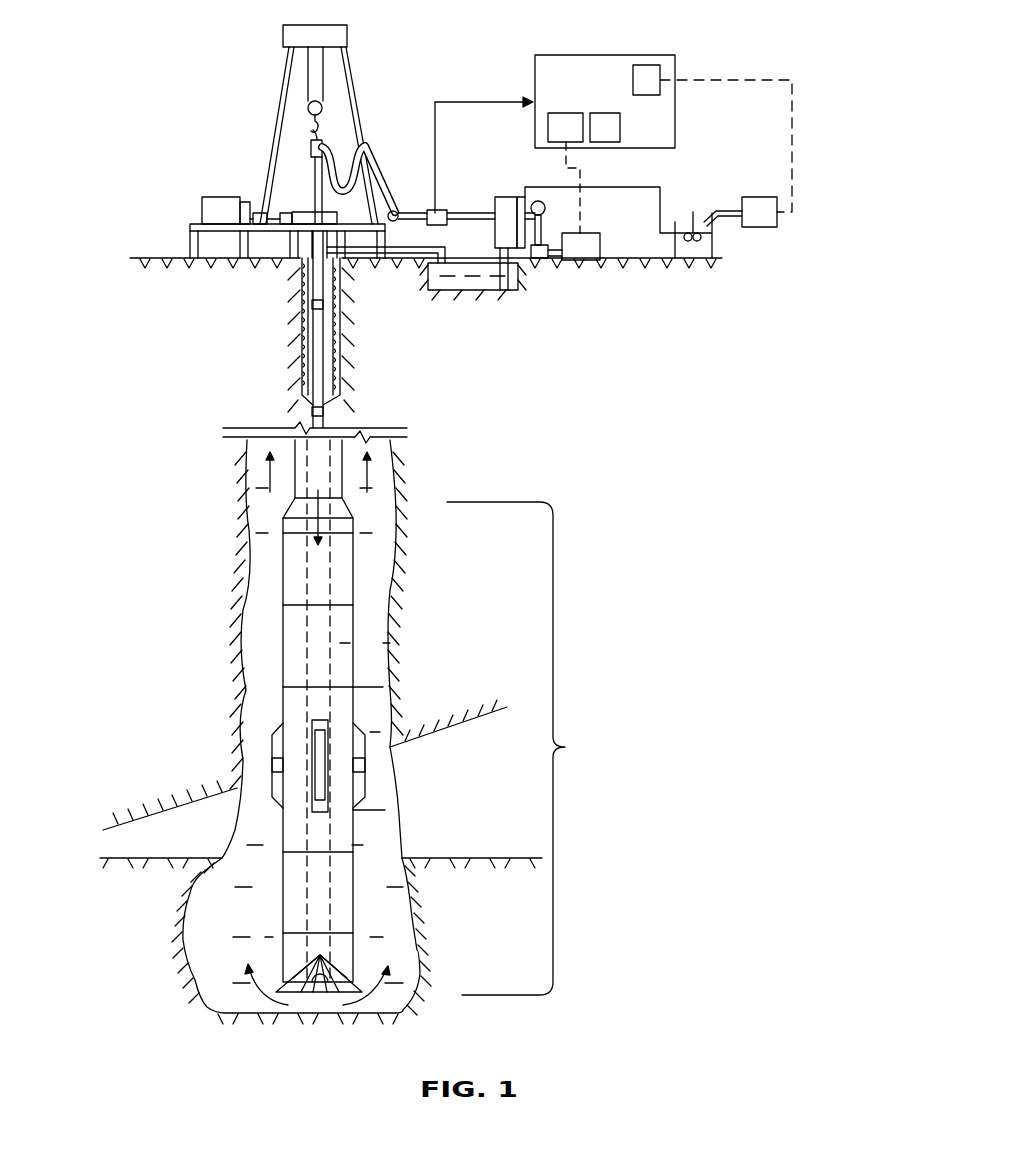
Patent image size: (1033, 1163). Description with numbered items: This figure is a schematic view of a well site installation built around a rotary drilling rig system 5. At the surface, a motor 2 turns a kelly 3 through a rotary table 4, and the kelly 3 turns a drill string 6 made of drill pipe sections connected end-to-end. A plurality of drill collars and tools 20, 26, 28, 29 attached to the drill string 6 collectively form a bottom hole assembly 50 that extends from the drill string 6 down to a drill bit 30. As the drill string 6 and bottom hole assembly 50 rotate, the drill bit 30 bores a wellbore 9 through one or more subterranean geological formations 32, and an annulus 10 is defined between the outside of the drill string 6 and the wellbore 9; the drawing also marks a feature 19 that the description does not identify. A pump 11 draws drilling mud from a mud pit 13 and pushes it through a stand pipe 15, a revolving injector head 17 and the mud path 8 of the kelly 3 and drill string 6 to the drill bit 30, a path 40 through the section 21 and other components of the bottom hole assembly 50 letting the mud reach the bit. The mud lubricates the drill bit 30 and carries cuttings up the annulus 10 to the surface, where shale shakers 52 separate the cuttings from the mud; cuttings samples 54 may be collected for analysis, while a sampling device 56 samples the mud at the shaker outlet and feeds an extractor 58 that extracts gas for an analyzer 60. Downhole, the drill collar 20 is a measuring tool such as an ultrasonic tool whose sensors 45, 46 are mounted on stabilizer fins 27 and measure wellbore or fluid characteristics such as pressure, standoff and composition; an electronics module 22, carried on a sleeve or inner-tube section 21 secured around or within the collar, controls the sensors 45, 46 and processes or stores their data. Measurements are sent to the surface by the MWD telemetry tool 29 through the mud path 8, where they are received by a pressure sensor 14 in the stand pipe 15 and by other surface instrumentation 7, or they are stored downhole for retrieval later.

The motor 2 is at (222, 197).
The kelly 3 is at (314, 178).
The rotary table 4 is at (330, 214).
The rotary drilling rig system 5 is at (248, 48).
The drill string 6 is at (316, 342).
The surface instrumentation 7 is at (675, 62).
The mud path 8 is at (293, 498).
The wellbore 9 is at (292, 374).
The annulus 10 is at (330, 424).
The pump 11 is at (600, 247).
The mud pit 13 is at (470, 292).
The pressure sensor 14 is at (437, 210).
The stand pipe 15 is at (482, 213).
The revolving injector head 17 is at (311, 146).
The formation bed 19 is at (250, 806).
The drill collar 20 is at (366, 725).
The section 21 is at (340, 717).
The electronics module 22 is at (353, 718).
The drill collar 26 is at (283, 548).
The stabilizer fins 27 is at (357, 797).
The drill collar 28 is at (340, 897).
The MWD telemetry tool 29 is at (285, 618).
The drill bit 30 is at (343, 973).
The subterranean geological formations 32 is at (129, 733).
The path 40 is at (283, 688).
The sensor 45 is at (363, 765).
The sensor 46 is at (273, 765).
The bottom hole assembly 50 is at (524, 748).
The shale shakers 52 is at (505, 197).
The cuttings samples 54 is at (522, 240).
The sampling device 56 is at (524, 198).
The extractor 58 is at (702, 250).
The analyzer 60 is at (759, 212).